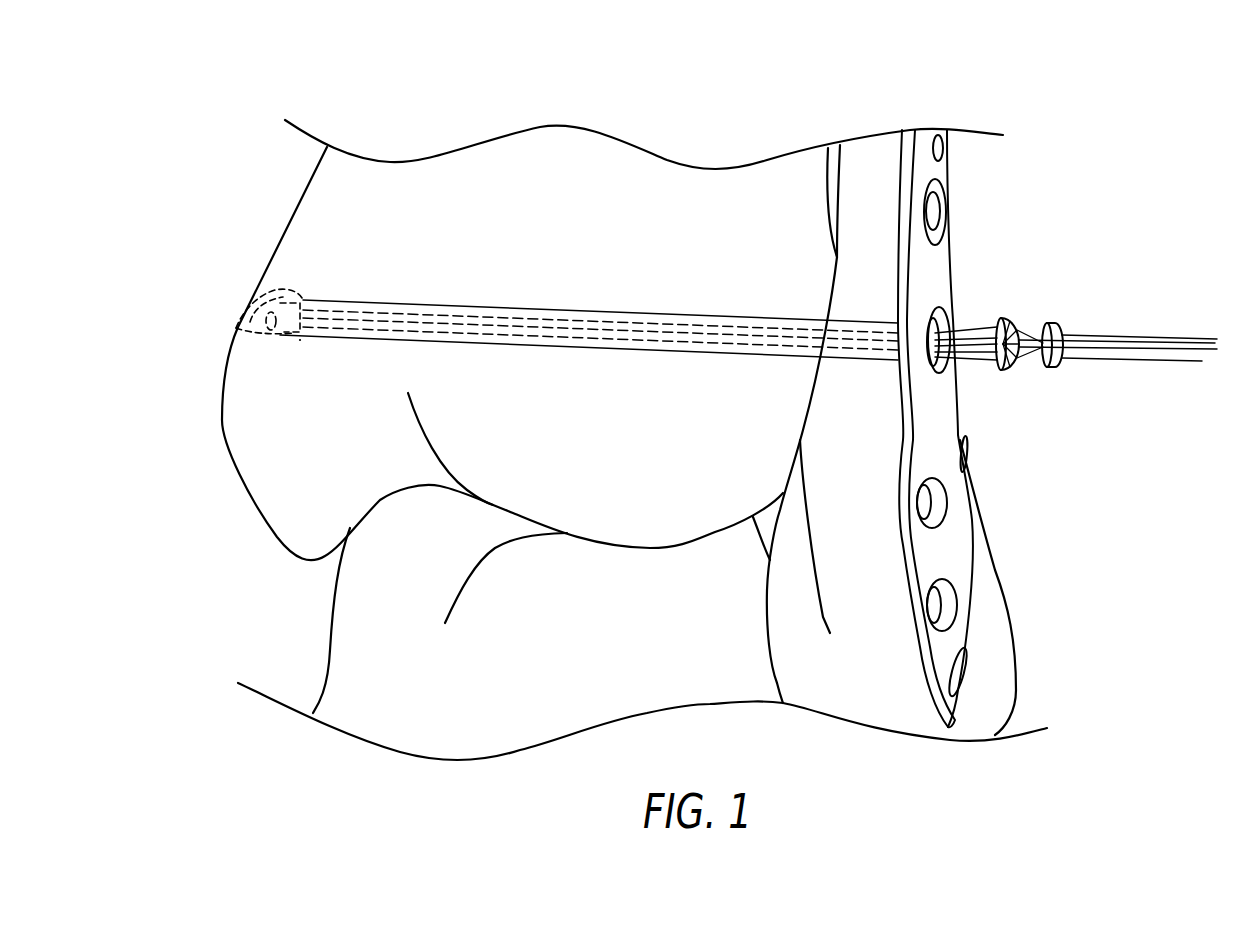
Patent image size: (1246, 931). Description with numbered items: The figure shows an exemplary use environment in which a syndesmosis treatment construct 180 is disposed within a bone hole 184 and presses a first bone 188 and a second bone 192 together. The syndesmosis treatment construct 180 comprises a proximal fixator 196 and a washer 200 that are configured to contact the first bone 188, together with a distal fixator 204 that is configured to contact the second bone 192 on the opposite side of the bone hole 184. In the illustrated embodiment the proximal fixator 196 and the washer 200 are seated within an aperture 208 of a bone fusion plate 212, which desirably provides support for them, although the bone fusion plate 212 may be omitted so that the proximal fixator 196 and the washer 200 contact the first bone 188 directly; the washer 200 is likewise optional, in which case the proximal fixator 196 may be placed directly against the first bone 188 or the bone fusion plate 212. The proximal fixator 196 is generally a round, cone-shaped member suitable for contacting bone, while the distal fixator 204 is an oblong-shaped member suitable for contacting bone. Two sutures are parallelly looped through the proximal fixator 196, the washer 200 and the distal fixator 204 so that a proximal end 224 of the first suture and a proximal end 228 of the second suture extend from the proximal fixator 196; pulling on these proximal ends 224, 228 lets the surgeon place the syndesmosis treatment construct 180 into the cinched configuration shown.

The syndesmosis treatment construct 180 is at (650, 230).
The bone hole 184 is at (328, 338).
The first bone 188 is at (860, 600).
The second bone 192 is at (517, 193).
The proximal fixator 196 is at (1048, 360).
The washer 200 is at (1013, 320).
The distal fixator 204 is at (240, 324).
The aperture 208 is at (945, 307).
The bone fusion plate 212 is at (943, 538).
The proximal end of the first suture 224 is at (1128, 335).
The proximal end of the second suture 228 is at (1148, 362).